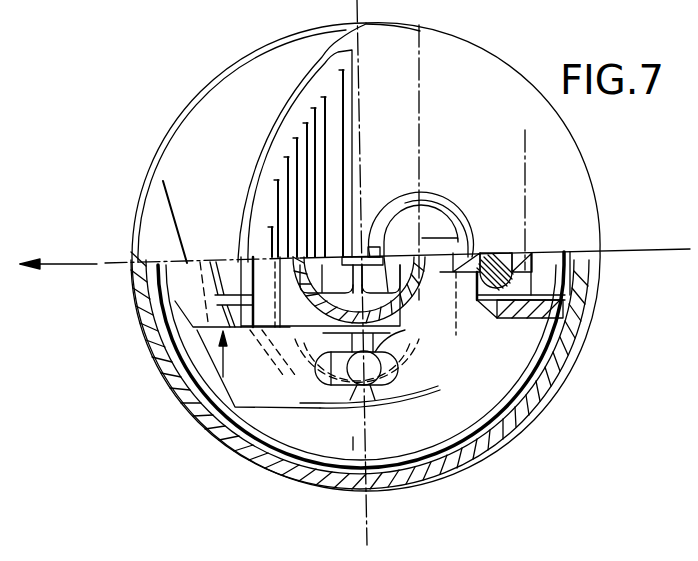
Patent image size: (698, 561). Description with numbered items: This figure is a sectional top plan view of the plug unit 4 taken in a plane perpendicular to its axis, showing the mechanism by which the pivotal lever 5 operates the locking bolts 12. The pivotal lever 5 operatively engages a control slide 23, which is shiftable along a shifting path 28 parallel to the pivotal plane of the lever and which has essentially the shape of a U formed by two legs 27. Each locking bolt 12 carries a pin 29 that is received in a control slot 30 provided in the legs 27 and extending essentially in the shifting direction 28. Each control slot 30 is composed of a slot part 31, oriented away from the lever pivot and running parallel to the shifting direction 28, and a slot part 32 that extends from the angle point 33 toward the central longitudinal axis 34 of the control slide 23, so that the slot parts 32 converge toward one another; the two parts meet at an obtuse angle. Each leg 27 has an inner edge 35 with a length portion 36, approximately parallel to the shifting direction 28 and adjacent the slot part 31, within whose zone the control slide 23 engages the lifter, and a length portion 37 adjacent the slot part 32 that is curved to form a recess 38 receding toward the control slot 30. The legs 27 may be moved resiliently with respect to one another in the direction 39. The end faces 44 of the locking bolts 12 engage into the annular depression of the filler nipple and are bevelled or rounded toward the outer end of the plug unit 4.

The plug unit 4 is at (186, 94).
The pivotal lever 5 is at (458, 95).
The locking bolt 12 is at (413, 408).
The control slide 23 is at (350, 345).
The legs 27 is at (240, 397).
The shifting path 28 is at (58, 262).
The pin 29 is at (357, 385).
The control slot 30 is at (323, 383).
The slot part 31 is at (323, 367).
The slot part 32 is at (392, 382).
The angle point 33 is at (366, 383).
The central longitudinal axis 34 is at (163, 181).
The inner edge 35 is at (175, 301).
The length portion 36 is at (350, 322).
The length portion 37 is at (390, 257).
The recess 38 is at (405, 316).
The direction 39 is at (223, 355).
The end face 44 is at (353, 437).